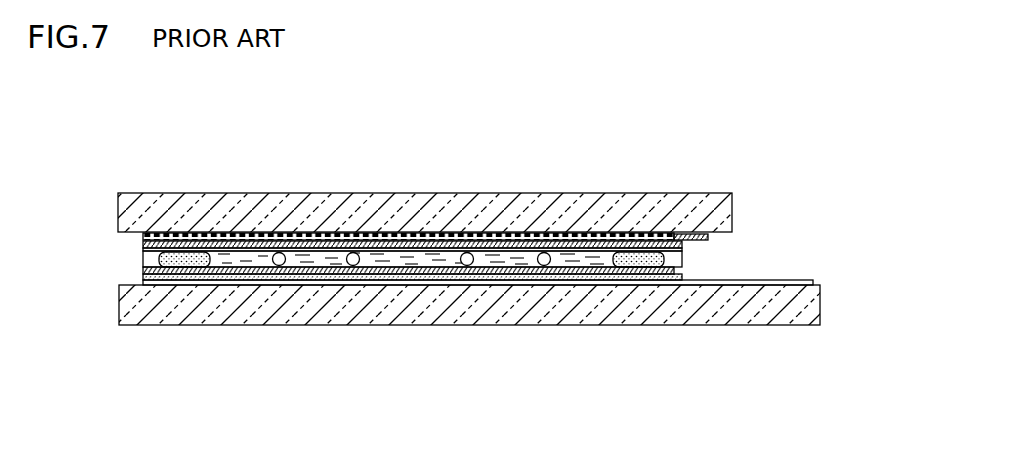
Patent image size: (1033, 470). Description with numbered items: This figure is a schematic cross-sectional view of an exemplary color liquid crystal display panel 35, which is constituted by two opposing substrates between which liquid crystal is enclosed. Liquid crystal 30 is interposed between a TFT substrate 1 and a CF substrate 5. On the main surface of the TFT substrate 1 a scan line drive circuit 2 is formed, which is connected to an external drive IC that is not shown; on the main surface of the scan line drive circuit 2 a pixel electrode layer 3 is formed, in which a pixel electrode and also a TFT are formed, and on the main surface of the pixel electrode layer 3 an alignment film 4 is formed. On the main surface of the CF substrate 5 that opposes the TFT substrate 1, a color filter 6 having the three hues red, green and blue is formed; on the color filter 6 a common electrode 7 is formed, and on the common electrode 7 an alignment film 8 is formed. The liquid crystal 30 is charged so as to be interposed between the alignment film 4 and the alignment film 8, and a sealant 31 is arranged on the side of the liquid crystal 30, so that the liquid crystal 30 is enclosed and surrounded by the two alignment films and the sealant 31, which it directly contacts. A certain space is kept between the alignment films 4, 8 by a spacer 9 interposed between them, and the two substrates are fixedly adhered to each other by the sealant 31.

The TFT substrate 1 is at (183, 311).
The scan line drive circuit 2 is at (257, 282).
The pixel electrode layer 3 is at (322, 277).
The alignment film 4 is at (399, 269).
The CF substrate 5 is at (231, 206).
The color filter 6 is at (300, 237).
The common electrode 7 is at (359, 245).
The alignment film 8 is at (411, 249).
The spacer 9 is at (467, 252).
The liquid crystal 30 is at (528, 258).
The sealant 31 is at (168, 258).
The liquid crystal display panel 35 is at (732, 130).